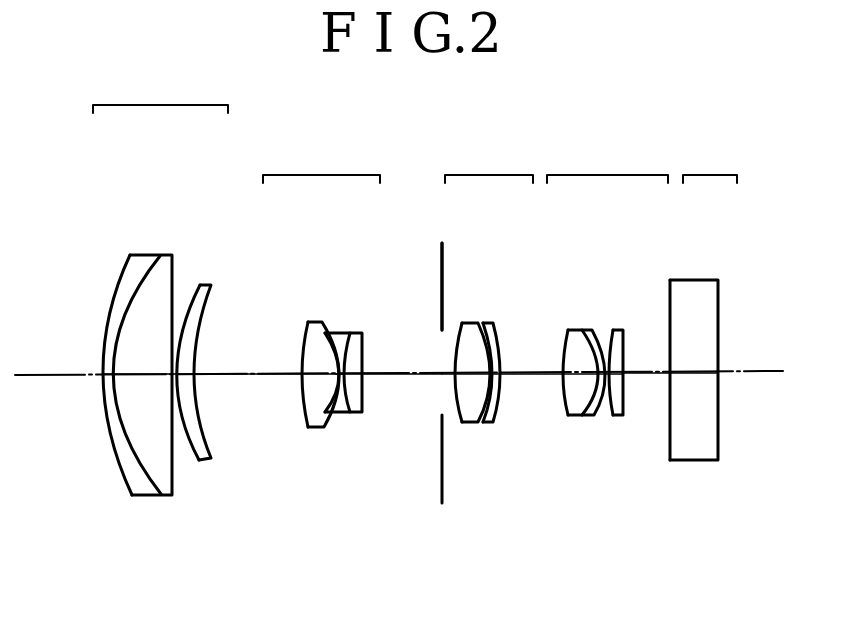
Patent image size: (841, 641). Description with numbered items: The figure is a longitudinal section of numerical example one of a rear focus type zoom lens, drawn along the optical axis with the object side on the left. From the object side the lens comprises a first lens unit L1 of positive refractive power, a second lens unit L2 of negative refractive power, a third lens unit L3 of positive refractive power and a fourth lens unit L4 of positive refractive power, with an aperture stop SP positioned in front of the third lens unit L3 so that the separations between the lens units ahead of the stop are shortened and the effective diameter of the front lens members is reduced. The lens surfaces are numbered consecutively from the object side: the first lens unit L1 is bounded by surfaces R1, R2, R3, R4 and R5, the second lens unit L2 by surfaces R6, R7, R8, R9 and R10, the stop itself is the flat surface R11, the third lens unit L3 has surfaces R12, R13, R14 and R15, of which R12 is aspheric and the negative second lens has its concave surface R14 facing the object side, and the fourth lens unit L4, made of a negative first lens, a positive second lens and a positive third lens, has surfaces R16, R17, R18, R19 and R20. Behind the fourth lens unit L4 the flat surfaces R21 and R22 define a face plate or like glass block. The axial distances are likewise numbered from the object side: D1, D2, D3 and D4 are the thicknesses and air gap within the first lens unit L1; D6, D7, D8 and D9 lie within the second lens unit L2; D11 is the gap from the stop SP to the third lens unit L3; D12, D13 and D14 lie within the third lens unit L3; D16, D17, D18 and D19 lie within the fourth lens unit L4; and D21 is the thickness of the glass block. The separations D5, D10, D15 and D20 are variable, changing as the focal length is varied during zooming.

The first lens unit L1 is at (160, 93).
The second lens unit L2 is at (321, 163).
The third lens unit L3 is at (489, 163).
The fourth lens unit L4 is at (607, 162).
The aperture stop SP is at (427, 311).
The first lens surface R1 is at (106, 345).
The second lens surface R2 is at (138, 290).
The third lens surface R3 is at (174, 282).
The fourth lens surface R4 is at (199, 292).
The fifth lens surface R5 is at (212, 292).
The sixth lens surface R6 is at (302, 353).
The seventh lens surface R7 is at (309, 325).
The eighth lens surface R8 is at (327, 333).
The ninth lens surface R9 is at (350, 335).
The tenth lens surface R10 is at (362, 350).
The stop surface R11 is at (442, 282).
The twelfth lens surface R12 is at (457, 340).
The thirteenth lens surface R13 is at (476, 330).
The fourteenth lens surface R14 is at (488, 328).
The fifteenth lens surface R15 is at (501, 350).
The sixteenth lens surface R16 is at (565, 352).
The seventeenth lens surface R17 is at (586, 338).
The eighteenth lens surface R18 is at (596, 333).
The nineteenth lens surface R19 is at (612, 332).
The twentieth lens surface R20 is at (624, 345).
The glass block front surface R21 is at (670, 312).
The glass block rear surface R22 is at (718, 305).
The first lens thickness D1 is at (105, 378).
The second lens thickness D2 is at (147, 378).
The third air separation D3 is at (175, 378).
The fourth lens thickness D4 is at (185, 378).
The fifth air separation D5 is at (257, 378).
The sixth lens thickness D6 is at (310, 380).
The seventh air separation D7 is at (338, 380).
The eighth lens thickness D8 is at (347, 380).
The ninth lens thickness D9 is at (357, 380).
The tenth air separation D10 is at (403, 378).
The eleventh air separation D11 is at (448, 380).
The twelfth lens thickness D12 is at (470, 380).
The thirteenth air separation D13 is at (491, 380).
The fourteenth lens thickness D14 is at (496, 380).
The fifteenth air separation D15 is at (545, 380).
The sixteenth lens thickness D16 is at (570, 380).
The seventeenth lens thickness D17 is at (592, 380).
The eighteenth air separation D18 is at (607, 380).
The nineteenth lens thickness D19 is at (617, 380).
The twentieth air separation D20 is at (648, 380).
The glass block thickness D21 is at (693, 380).